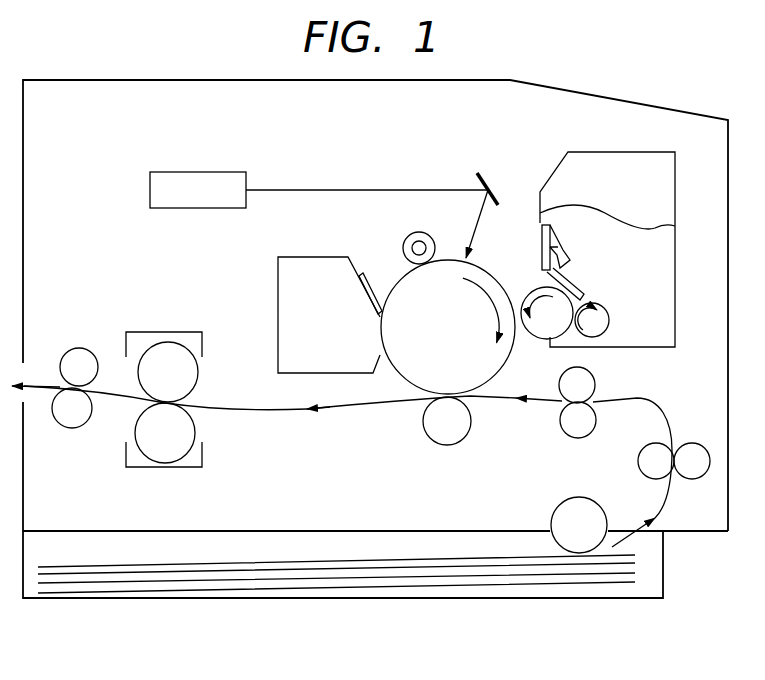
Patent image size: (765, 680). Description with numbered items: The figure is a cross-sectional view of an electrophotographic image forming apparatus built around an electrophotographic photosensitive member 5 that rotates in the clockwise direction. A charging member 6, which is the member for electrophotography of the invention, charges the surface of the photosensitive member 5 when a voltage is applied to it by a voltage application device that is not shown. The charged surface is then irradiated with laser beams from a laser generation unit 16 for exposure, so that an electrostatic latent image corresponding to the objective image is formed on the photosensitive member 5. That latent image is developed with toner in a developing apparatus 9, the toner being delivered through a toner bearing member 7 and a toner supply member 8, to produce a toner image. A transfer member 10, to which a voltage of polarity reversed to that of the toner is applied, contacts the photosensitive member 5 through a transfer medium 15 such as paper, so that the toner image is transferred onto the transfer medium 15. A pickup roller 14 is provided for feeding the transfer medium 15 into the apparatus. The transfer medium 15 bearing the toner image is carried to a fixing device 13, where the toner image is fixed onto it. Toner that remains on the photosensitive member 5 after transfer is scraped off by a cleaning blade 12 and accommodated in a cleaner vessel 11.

The electrophotographic photosensitive member 5 is at (485, 268).
The charging member 6 is at (405, 238).
The toner bearing member 7 is at (535, 342).
The toner supply member 8 is at (602, 302).
The developing apparatus 9 is at (622, 150).
The transfer member 10 is at (447, 446).
The cleaner vessel 11 is at (305, 255).
The cleaning blade 12 is at (358, 297).
The fixing device 13 is at (167, 331).
The pickup roller 14 is at (578, 551).
The transfer medium 15 is at (350, 413).
The laser generation unit 16 is at (210, 172).